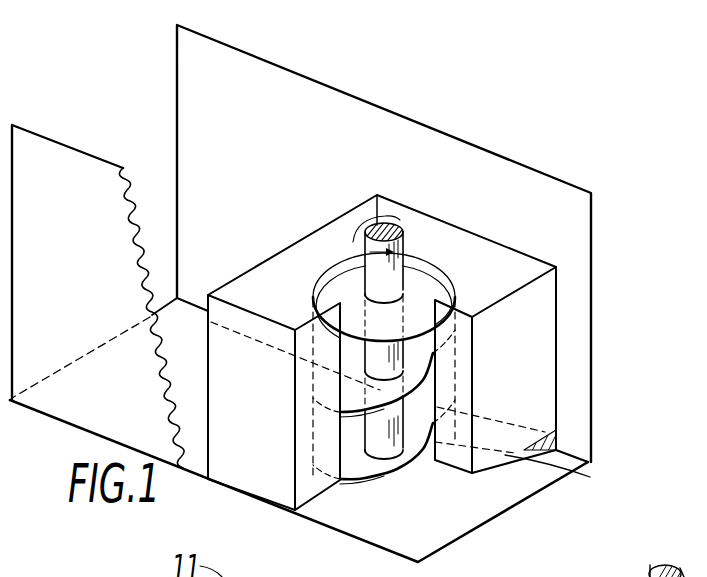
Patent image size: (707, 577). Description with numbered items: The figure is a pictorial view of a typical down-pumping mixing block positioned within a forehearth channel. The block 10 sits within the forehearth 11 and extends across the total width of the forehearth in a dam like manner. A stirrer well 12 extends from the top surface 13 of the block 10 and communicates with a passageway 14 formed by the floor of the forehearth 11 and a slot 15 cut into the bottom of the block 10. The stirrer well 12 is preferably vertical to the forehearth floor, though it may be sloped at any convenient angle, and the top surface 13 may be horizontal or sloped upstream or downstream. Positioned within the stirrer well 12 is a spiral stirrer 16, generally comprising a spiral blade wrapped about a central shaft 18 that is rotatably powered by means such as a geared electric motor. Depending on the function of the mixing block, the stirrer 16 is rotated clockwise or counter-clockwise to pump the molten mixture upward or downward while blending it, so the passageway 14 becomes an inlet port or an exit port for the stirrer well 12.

The block 10 is at (372, 339).
The forehearth 11 is at (221, 160).
The stirrer well 12 is at (333, 263).
The top surface 13 is at (271, 280).
The passageway 14 is at (489, 471).
The slot 15 is at (558, 450).
The spiral stirrer 16 is at (430, 254).
The central shaft 18 is at (650, 562).